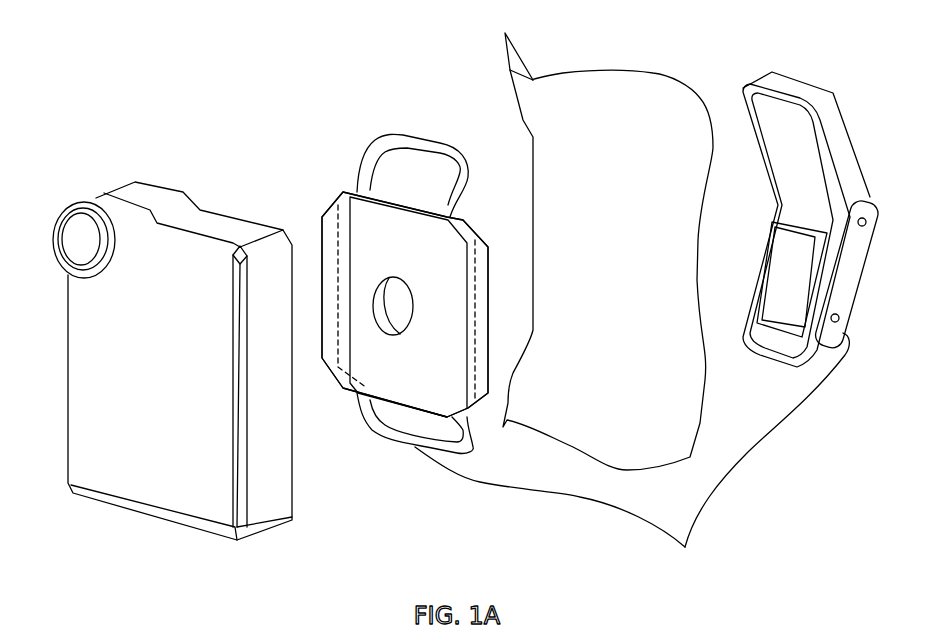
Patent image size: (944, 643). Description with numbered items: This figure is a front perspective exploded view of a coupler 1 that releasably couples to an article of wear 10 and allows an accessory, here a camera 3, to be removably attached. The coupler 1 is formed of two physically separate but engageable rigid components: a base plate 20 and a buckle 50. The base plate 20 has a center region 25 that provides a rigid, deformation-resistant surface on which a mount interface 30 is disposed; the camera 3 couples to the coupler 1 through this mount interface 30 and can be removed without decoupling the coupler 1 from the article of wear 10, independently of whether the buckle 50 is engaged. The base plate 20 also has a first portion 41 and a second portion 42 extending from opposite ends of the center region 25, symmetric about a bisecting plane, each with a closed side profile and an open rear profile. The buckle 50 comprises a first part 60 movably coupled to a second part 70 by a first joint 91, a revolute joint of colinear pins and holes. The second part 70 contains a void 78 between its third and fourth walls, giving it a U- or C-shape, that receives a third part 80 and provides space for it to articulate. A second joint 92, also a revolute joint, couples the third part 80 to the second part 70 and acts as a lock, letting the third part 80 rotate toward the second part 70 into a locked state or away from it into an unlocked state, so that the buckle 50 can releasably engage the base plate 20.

The coupler 1 is at (632, 455).
The camera 3 is at (235, 533).
The article of wear 10 is at (652, 73).
The base plate 20 is at (297, 127).
The center region 25 is at (332, 207).
The mount interface 30 is at (406, 313).
The first portion 41 is at (407, 137).
The second portion 42 is at (388, 437).
The buckle 50 is at (858, 110).
The first part 60 is at (783, 73).
The second part 70 is at (867, 258).
The void 78 is at (800, 212).
The third part 80 is at (772, 222).
The first joint 91 is at (866, 221).
The second joint 92 is at (839, 319).